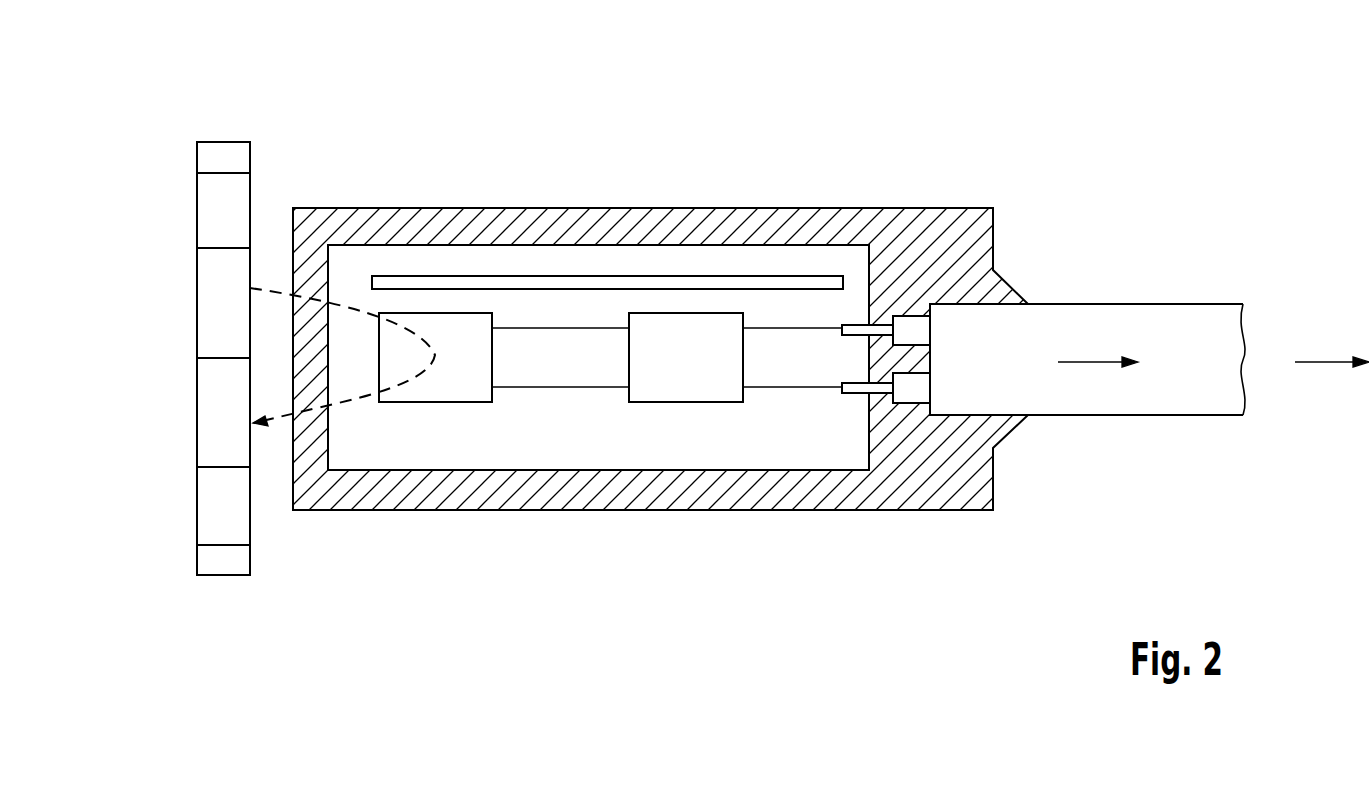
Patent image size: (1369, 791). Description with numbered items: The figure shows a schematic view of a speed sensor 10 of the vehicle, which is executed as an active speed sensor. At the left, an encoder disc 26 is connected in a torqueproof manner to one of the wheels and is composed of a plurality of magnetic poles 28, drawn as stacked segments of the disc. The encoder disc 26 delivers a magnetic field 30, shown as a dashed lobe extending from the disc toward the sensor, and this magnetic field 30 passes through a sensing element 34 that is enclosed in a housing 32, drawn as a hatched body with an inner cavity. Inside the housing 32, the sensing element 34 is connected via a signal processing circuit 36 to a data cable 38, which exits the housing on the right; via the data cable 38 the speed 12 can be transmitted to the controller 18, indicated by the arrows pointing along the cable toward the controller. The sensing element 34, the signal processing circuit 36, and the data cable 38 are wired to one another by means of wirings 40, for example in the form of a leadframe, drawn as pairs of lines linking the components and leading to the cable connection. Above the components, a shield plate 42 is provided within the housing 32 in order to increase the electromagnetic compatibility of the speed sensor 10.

The speed sensor 10 is at (872, 143).
The speed 12 is at (1088, 364).
The controller 18 is at (1324, 364).
The encoder disc 26 is at (222, 142).
The magnetic poles 28 is at (197, 155).
The magnetic field 30 is at (272, 288).
The housing 32 is at (598, 230).
The sensing element 34 is at (438, 390).
The signal processing circuit 36 is at (684, 390).
The data cable 38 is at (1160, 322).
The wirings 40 is at (532, 387).
The shield plate 42 is at (460, 282).